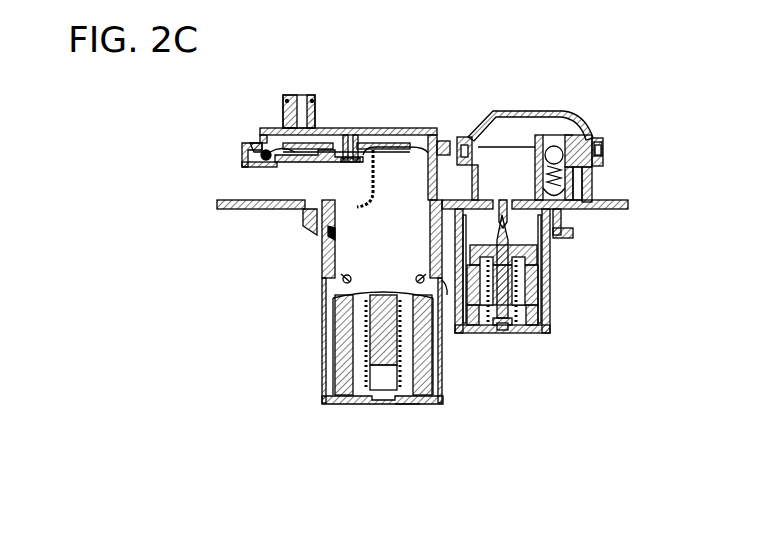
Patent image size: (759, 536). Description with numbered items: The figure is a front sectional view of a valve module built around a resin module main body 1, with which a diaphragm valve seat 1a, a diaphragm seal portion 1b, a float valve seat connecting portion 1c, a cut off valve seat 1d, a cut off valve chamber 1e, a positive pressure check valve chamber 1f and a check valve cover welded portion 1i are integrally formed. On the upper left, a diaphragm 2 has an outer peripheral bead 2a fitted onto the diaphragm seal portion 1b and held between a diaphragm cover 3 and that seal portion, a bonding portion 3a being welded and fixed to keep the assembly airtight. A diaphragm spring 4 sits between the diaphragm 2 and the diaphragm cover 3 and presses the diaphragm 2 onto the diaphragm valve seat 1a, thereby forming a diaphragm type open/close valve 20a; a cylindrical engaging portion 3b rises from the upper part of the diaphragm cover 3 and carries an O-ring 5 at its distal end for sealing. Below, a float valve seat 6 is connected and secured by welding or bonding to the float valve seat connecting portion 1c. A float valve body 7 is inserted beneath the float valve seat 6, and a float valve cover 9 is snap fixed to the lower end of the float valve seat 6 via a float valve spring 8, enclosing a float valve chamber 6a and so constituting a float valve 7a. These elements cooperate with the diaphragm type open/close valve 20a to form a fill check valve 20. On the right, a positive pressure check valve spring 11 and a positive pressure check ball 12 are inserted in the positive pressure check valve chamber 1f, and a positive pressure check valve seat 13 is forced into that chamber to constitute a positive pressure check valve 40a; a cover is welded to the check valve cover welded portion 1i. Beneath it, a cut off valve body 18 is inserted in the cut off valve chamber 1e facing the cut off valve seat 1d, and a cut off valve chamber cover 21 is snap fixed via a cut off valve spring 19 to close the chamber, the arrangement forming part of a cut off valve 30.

The resin module main body 1 is at (593, 192).
The diaphragm valve seat 1a is at (376, 150).
The diaphragm seal portion 1b is at (262, 143).
The float valve seat connecting portion 1c is at (330, 235).
The cut off valve seat 1d is at (512, 218).
The cut off valve chamber 1e is at (530, 230).
The positive pressure check valve chamber 1f is at (553, 175).
The check valve cover welded portion 1i is at (603, 155).
The diaphragm 2 is at (312, 157).
The outer peripheral bead 2a is at (262, 160).
The diaphragm cover 3 is at (262, 130).
The bonding portion 3a is at (245, 160).
The cylindrical engaging portion 3b is at (285, 122).
The diaphragm spring 4 is at (353, 148).
The O-ring 5 is at (317, 105).
The float valve seat 6 is at (322, 290).
The float valve chamber 6a is at (447, 295).
The float valve body 7 is at (335, 348).
The float valve 7a is at (409, 412).
The float valve spring 8 is at (368, 382).
The float valve cover 9 is at (333, 404).
The positive pressure check valve spring 11 is at (540, 172).
The positive pressure check ball 12 is at (563, 140).
The positive pressure check valve seat 13 is at (553, 138).
The cut off valve body 18 is at (547, 290).
The cut off valve spring 19 is at (550, 318).
The fill check valve 20 is at (312, 250).
The diaphragm type open/close valve 20a is at (390, 174).
The cut off valve chamber cover 21 is at (492, 330).
The cut off valve 30 is at (570, 265).
The positive pressure check valve 40a is at (537, 128).